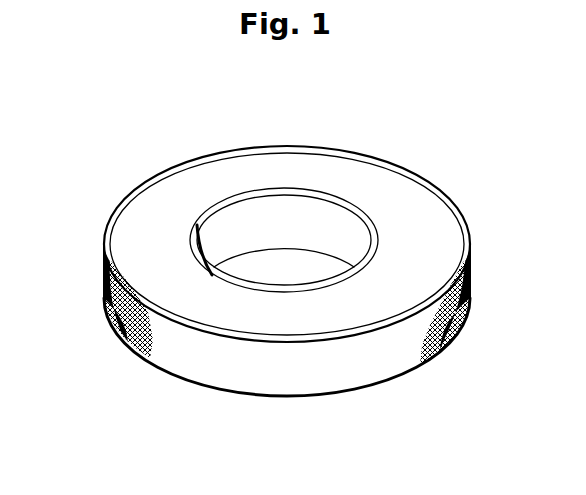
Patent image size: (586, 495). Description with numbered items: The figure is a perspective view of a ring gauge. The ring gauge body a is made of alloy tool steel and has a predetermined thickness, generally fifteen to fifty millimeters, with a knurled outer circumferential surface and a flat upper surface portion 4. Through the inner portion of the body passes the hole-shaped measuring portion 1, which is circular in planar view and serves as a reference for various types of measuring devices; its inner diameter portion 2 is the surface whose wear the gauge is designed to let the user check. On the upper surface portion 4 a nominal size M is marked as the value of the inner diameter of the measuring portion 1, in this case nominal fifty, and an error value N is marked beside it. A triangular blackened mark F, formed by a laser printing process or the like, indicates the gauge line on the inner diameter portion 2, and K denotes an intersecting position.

The ring gauge body a is at (166, 159).
The nominal size M is at (257, 138).
The error value N is at (316, 160).
The intersecting position K is at (324, 193).
The triangular blackened mark F is at (416, 245).
The hole-shaped measuring portion 1 is at (258, 271).
The inner diameter portion 2 is at (362, 243).
The upper surface portion 4 is at (157, 257).